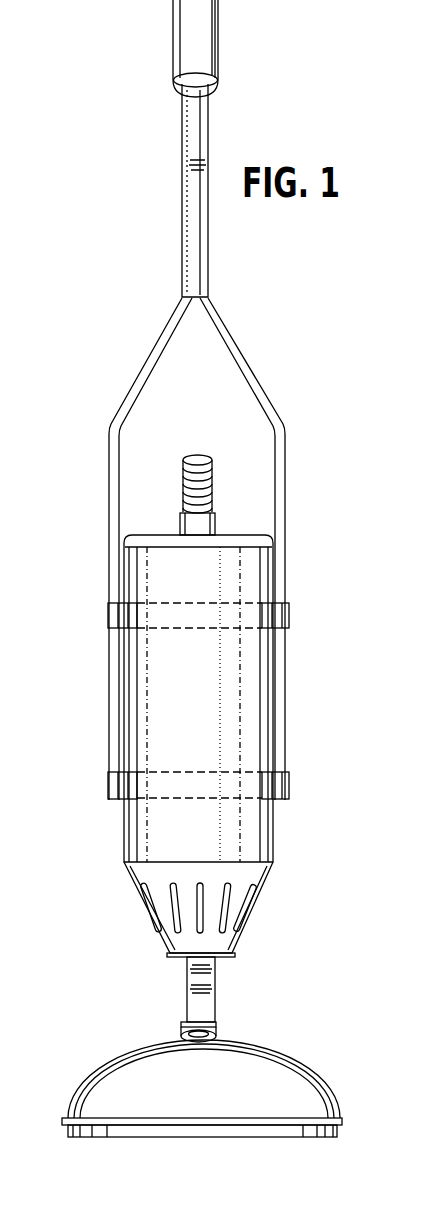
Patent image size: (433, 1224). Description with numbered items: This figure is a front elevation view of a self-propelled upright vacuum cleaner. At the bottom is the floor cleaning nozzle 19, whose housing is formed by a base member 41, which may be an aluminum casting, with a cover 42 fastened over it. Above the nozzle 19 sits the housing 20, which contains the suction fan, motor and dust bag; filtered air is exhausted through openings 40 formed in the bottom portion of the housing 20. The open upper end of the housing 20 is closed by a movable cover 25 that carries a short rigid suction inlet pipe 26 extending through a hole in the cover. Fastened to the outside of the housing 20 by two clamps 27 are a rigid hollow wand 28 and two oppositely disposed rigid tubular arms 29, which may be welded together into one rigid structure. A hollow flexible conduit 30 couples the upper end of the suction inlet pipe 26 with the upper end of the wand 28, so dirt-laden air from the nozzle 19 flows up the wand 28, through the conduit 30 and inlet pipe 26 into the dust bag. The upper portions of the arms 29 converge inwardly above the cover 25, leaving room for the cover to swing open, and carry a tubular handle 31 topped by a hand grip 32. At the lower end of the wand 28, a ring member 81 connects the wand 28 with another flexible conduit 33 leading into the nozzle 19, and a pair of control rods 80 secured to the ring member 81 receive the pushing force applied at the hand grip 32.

The floor cleaning nozzle 19 is at (113, 1043).
The housing 20 is at (203, 694).
The movable cover 25 is at (165, 540).
The suction inlet pipe 26 is at (205, 522).
The clamps 27 is at (108, 614).
The rigid hollow wand 28 is at (210, 1000).
The tubular arms 29 is at (109, 497).
The flexible conduit 30 is at (192, 455).
The tubular handle 31 is at (185, 143).
The hand grip 32 is at (207, 18).
The flexible conduit 33 is at (216, 1030).
The openings 40 is at (233, 912).
The base member 41 is at (295, 1105).
The cover 42 is at (305, 1085).
The control rods 80 is at (183, 1031).
The ring member 81 is at (190, 1022).